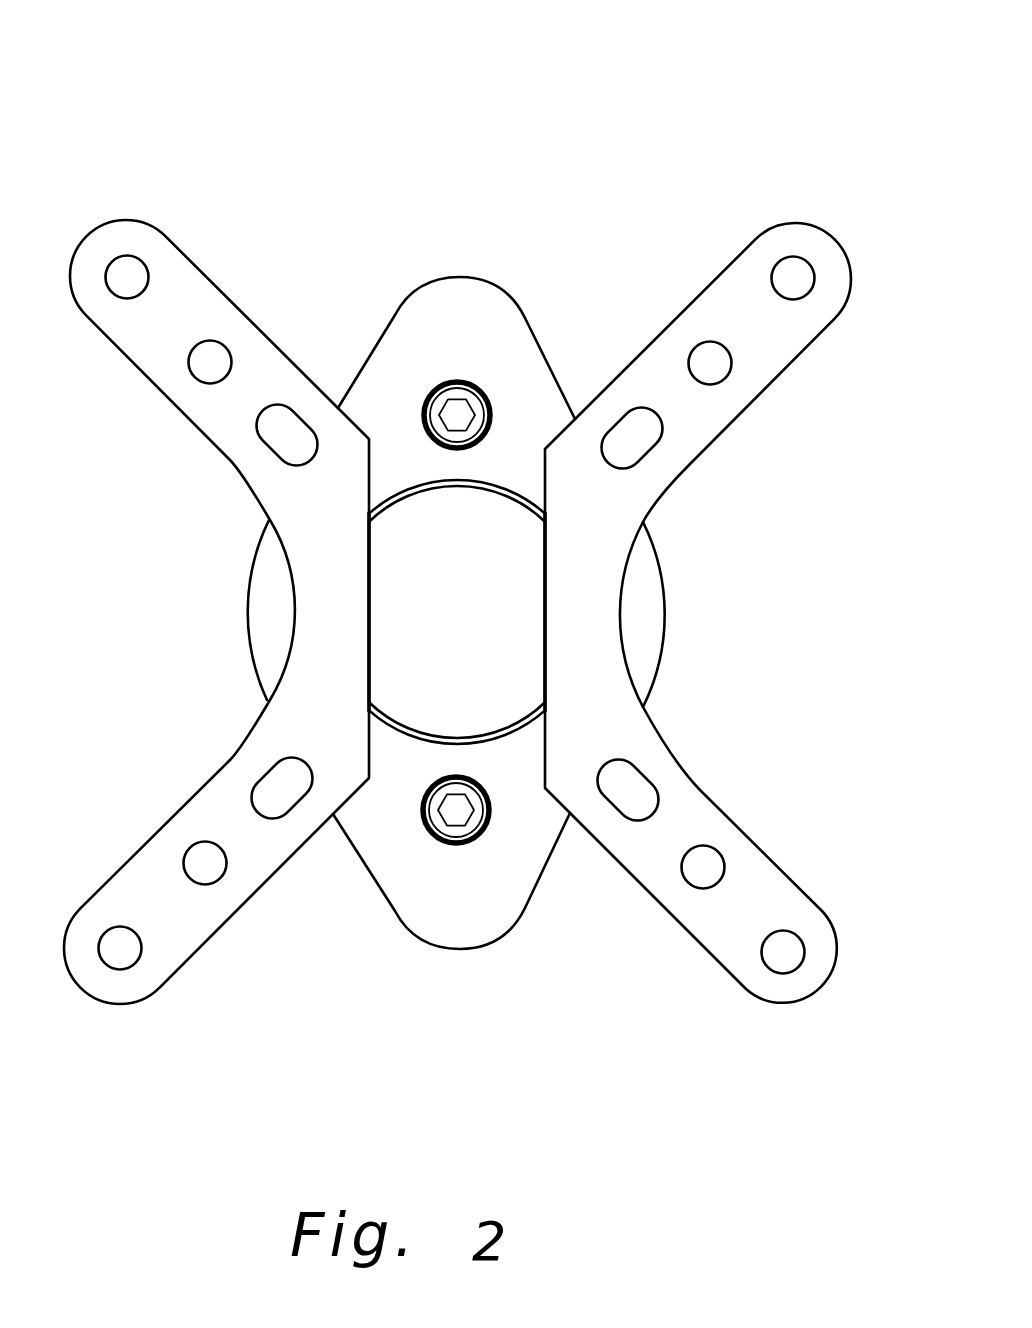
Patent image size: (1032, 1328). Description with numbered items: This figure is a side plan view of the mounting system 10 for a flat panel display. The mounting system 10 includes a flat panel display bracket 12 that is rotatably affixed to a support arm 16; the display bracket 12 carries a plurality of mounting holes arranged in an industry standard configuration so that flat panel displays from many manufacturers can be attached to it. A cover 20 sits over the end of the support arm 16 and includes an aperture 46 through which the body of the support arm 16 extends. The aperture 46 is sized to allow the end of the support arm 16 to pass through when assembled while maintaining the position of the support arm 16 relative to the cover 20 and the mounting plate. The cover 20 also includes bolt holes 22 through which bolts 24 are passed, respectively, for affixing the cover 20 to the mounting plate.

The mounting system 10 is at (571, 90).
The flat panel display bracket 12 is at (783, 370).
The support arm 16 is at (471, 643).
The cover 20 is at (520, 307).
The bolt holes 22 is at (426, 833).
The bolts 24 is at (488, 827).
The aperture 46 is at (410, 483).